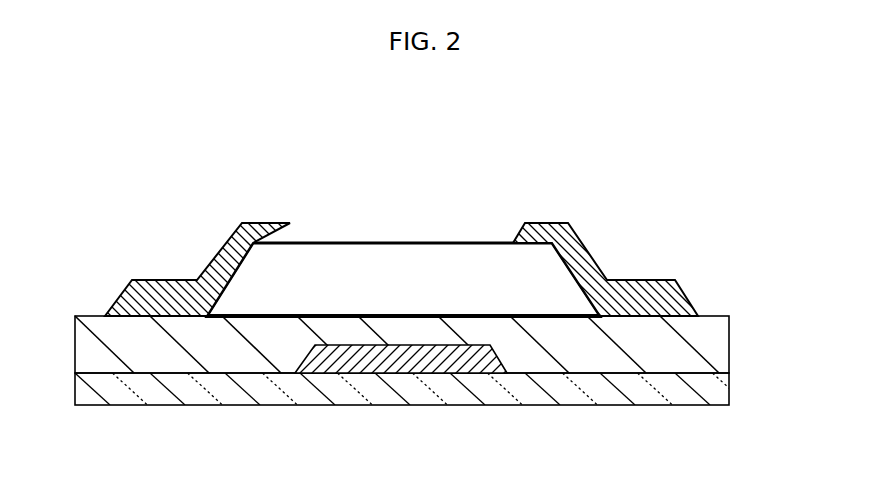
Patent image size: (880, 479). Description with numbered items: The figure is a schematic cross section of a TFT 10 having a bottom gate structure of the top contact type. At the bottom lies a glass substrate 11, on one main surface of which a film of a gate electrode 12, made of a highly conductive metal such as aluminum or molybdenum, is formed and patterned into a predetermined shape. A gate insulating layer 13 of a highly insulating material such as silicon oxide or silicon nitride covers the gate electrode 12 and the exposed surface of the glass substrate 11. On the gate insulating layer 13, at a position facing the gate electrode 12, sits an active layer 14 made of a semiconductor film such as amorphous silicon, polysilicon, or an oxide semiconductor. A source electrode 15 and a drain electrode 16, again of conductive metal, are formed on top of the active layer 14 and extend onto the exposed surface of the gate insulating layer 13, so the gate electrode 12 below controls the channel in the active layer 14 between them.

The TFT 10 is at (632, 159).
The glass substrate 11 is at (720, 390).
The gate electrode 12 is at (398, 360).
The gate insulating layer 13 is at (720, 344).
The active layer 14 is at (350, 268).
The source electrode 15 is at (165, 292).
The drain electrode 16 is at (637, 297).